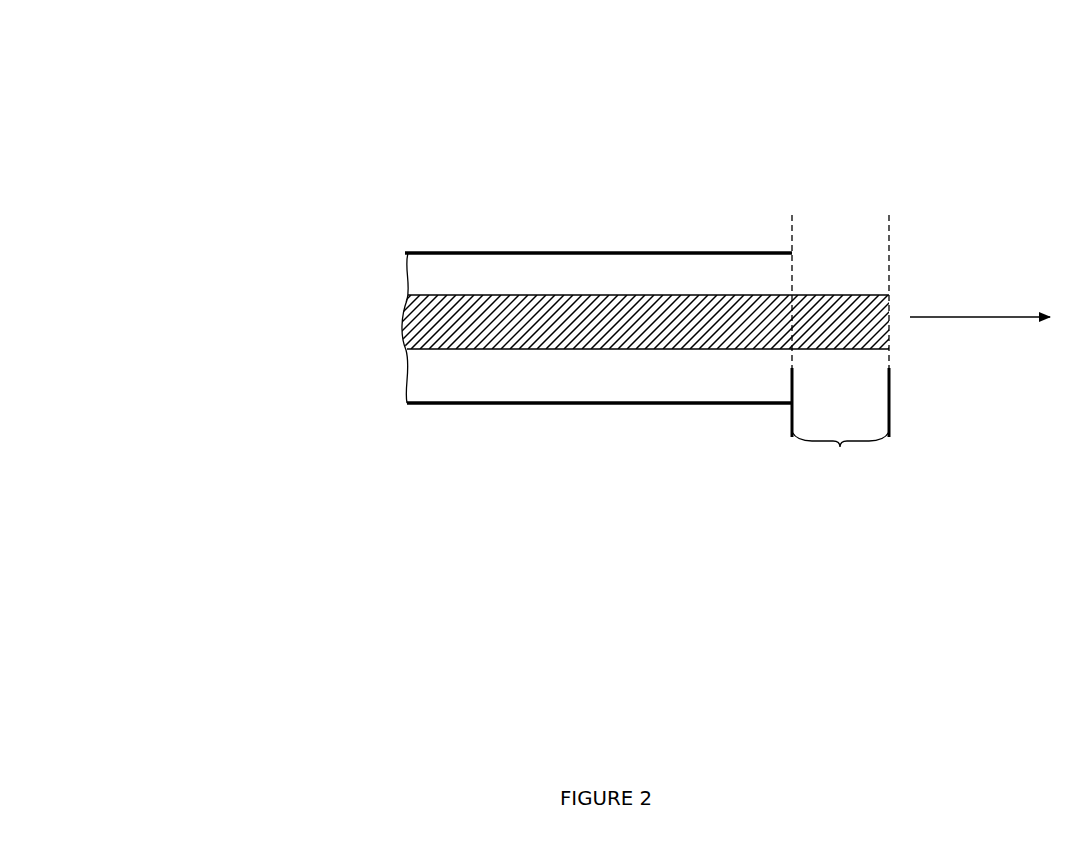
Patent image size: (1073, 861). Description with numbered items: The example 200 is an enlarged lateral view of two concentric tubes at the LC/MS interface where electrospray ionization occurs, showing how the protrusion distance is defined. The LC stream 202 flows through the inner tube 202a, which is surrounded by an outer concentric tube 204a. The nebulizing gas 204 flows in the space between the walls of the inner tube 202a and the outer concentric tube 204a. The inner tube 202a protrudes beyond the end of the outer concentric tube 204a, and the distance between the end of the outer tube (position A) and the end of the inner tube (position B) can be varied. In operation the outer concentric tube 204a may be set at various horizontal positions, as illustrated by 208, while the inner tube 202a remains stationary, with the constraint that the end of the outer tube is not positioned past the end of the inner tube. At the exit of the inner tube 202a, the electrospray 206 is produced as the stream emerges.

The example 200 is at (148, 34).
The LC stream 202 is at (427, 328).
The inner tube 202a is at (762, 295).
The nebulizing gas 204 is at (506, 328).
The outer concentric tube 204a is at (574, 251).
The electrospray 206 is at (988, 331).
The horizontal positions 208 is at (888, 179).